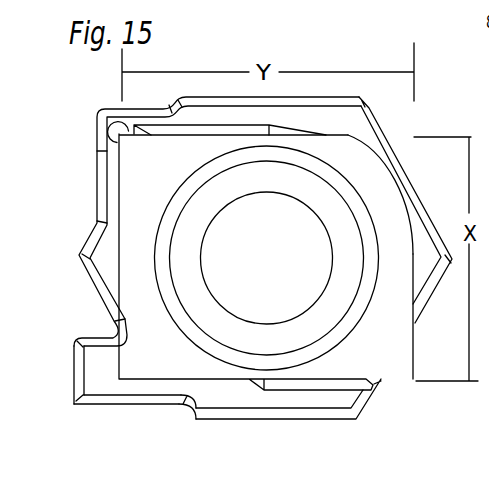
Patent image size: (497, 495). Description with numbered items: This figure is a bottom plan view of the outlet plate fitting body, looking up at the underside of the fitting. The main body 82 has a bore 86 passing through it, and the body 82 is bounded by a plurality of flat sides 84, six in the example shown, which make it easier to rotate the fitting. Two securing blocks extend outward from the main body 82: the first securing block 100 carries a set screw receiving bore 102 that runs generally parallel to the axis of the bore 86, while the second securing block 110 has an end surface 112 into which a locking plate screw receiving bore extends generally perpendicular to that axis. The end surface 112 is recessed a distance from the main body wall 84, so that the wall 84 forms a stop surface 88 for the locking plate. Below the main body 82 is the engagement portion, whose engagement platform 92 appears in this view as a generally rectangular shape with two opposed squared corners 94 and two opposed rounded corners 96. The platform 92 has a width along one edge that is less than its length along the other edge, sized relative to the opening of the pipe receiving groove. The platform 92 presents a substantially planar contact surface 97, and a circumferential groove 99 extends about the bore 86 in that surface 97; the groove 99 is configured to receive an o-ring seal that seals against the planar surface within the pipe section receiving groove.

The main body 82 is at (342, 408).
The flat sides 84 is at (240, 417).
The bore 86 is at (290, 310).
The stop surface 88 is at (168, 406).
The engagement platform 92 is at (125, 240).
The squared corners 94 is at (128, 180).
The rounded corners 96 is at (381, 167).
The planar contact surface 97 is at (385, 203).
The circumferential groove 99 is at (338, 334).
The first securing block 100 is at (100, 149).
The set screw receiving bore 102 is at (107, 128).
The second securing block 110 is at (75, 377).
The end surface 112 is at (97, 402).